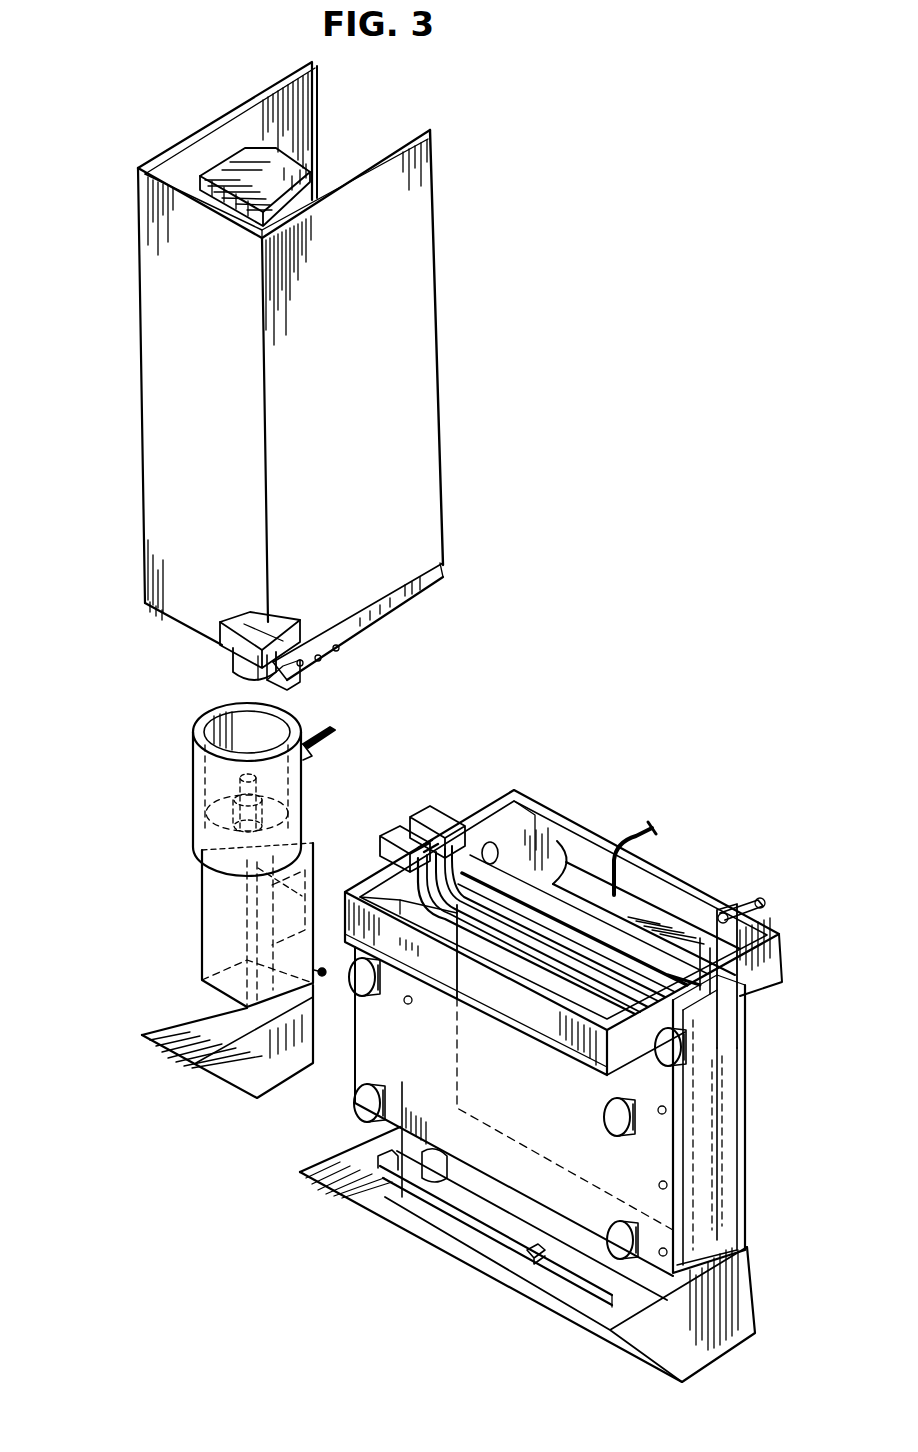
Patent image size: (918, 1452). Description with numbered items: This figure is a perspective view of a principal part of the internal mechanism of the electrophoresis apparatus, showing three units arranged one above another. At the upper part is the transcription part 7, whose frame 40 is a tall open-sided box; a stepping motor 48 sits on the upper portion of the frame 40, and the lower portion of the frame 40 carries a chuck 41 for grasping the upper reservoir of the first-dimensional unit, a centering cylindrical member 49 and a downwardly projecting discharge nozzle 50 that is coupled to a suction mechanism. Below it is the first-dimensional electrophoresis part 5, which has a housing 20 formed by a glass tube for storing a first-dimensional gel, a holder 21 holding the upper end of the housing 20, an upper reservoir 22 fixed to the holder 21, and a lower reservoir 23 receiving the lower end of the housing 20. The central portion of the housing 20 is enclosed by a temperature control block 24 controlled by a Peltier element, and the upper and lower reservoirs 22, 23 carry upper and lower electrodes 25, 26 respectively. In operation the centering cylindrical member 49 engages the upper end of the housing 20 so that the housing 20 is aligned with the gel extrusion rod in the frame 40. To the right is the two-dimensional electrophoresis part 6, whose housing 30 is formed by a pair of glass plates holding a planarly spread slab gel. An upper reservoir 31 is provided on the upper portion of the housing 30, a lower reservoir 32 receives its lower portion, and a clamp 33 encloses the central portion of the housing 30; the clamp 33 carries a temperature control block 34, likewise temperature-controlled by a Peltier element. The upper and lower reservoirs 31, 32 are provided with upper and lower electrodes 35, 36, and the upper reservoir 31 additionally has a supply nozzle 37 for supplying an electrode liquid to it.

The first-dimensional electrophoresis part 5 is at (148, 858).
The two-dimensional electrophoresis part 6 is at (760, 1150).
The transcription part 7 is at (126, 410).
The housing 20 is at (240, 952).
The holder 21 is at (284, 808).
The upper reservoir 22 is at (203, 784).
The lower reservoir 23 is at (238, 1077).
The temperature control block 24 is at (213, 929).
The upper electrode 25 is at (336, 722).
The lower electrode 26 is at (322, 978).
The housing 30 is at (478, 838).
The upper reservoir 31 is at (508, 820).
The lower reservoir 32 is at (360, 1188).
The clamp 33 is at (734, 1124).
The temperature control block 34 is at (720, 1207).
The upper electrode 35 is at (565, 873).
The lower electrode 36 is at (580, 1294).
The supply nozzle 37 is at (640, 832).
The frame 40 is at (424, 440).
The chuck 41 is at (160, 618).
The stepping motor 48 is at (283, 178).
The centering cylindrical member 49 is at (242, 660).
The discharge nozzle 50 is at (218, 650).